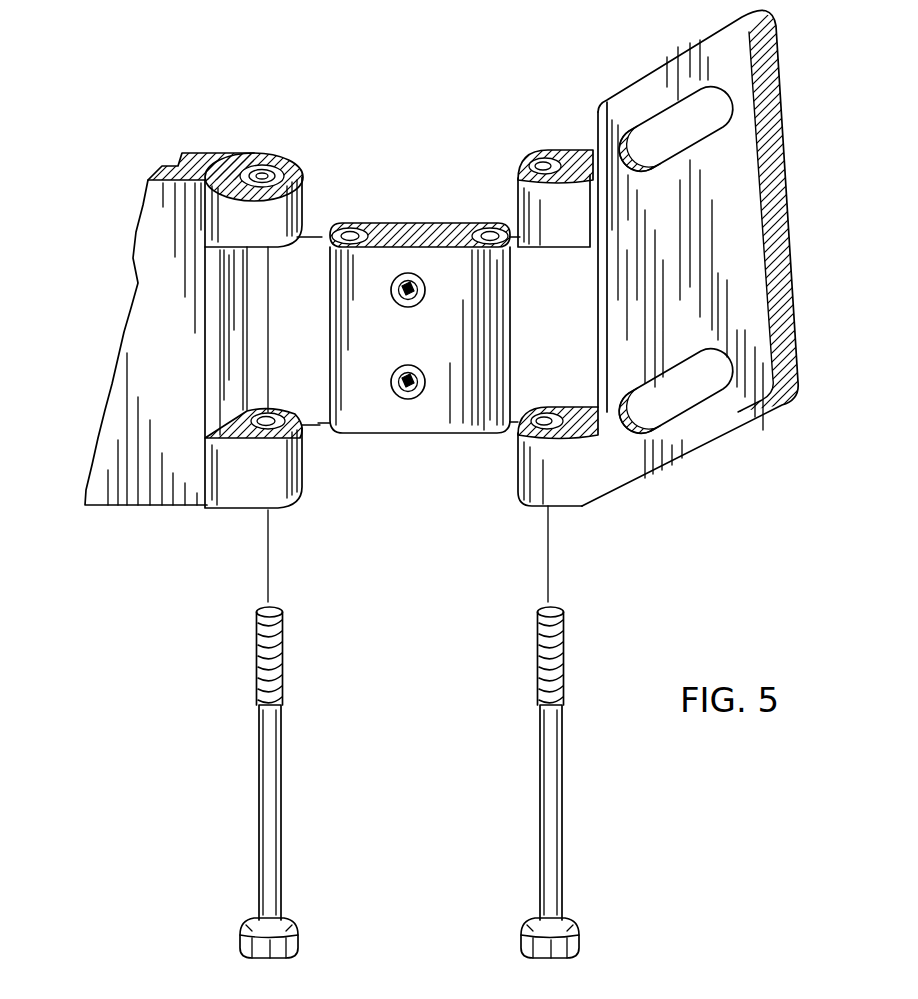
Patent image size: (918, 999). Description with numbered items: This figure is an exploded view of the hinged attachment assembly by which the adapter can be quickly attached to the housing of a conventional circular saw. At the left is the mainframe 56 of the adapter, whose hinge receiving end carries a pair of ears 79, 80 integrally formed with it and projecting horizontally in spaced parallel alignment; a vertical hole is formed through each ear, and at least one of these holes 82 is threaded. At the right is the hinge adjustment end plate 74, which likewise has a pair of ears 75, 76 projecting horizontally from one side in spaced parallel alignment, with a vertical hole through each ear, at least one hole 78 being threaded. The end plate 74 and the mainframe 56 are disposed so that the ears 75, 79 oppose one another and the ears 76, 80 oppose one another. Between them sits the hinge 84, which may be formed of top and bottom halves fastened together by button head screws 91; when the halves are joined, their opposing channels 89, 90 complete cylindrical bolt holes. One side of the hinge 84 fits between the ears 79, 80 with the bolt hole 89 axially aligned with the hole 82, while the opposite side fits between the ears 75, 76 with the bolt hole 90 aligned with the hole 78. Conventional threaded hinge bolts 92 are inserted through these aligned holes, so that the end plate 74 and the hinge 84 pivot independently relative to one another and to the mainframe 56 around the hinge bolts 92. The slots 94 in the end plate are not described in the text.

The mainframe 56 is at (168, 342).
The hinge adjustment end plate 74 is at (770, 214).
The ear 75 is at (566, 210).
The ear 76 is at (583, 478).
The threaded hole 78 is at (540, 158).
The ear 79 is at (238, 205).
The ear 80 is at (217, 502).
The threaded hole 82 is at (262, 178).
The hinge 84 is at (423, 413).
The channel / bolt hole 89 is at (351, 230).
The channel / bolt hole 90 is at (489, 230).
The button head screws 91 is at (397, 310).
The hinge bolts 92 is at (288, 847).
The slots in bracket plate 94 is at (670, 127).